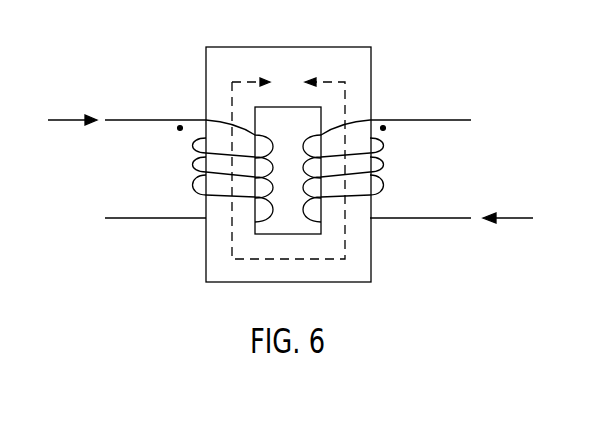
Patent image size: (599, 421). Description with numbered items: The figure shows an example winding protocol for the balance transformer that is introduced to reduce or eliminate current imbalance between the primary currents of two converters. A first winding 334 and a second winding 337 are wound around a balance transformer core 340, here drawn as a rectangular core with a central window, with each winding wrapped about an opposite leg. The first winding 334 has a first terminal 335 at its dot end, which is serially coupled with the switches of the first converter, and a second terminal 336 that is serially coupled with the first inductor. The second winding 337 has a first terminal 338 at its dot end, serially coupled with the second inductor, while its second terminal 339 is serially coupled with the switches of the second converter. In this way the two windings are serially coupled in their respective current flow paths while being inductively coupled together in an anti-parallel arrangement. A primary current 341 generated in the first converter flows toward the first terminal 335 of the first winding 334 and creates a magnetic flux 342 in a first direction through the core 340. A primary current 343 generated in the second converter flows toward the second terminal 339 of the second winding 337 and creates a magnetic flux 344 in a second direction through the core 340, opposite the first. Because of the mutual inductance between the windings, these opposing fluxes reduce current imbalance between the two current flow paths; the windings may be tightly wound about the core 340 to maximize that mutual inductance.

The first winding 334 is at (193, 141).
The first terminal 335 is at (115, 120).
The second terminal 336 is at (115, 217).
The second winding 337 is at (377, 150).
The first terminal 338 is at (420, 120).
The second terminal 339 is at (420, 217).
The balance transformer core 340 is at (205, 63).
The primary current 341 is at (68, 115).
The magnetic flux 342 is at (277, 67).
The primary current 343 is at (515, 215).
The magnetic flux 344 is at (337, 235).